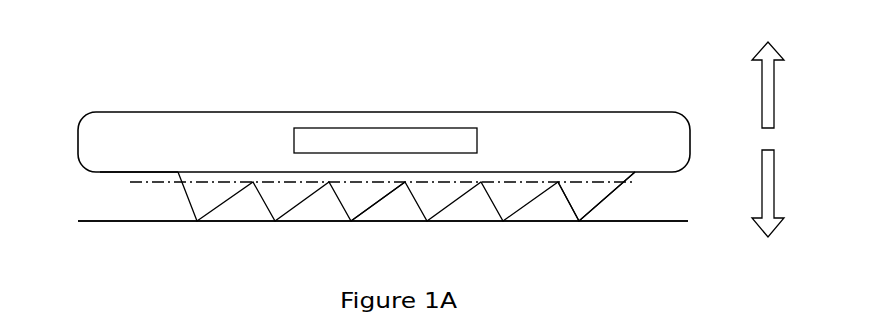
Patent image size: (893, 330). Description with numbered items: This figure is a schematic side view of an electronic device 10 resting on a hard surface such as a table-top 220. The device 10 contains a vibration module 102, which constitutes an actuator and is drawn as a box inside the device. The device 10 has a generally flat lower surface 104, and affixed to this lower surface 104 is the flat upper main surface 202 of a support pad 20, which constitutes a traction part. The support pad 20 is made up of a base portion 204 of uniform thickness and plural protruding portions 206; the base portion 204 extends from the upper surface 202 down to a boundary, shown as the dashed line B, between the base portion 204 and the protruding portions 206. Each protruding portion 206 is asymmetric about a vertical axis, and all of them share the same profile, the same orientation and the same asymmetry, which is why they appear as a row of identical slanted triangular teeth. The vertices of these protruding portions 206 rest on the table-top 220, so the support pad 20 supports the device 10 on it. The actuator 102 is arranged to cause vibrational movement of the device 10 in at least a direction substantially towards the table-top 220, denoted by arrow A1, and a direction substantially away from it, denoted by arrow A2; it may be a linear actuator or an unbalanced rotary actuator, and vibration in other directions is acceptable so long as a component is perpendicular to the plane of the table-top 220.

The electronic device 10 is at (216, 112).
The vibration module 102 is at (425, 128).
The lower surface 104 is at (125, 165).
The boundary B is at (127, 184).
The support pad 20 is at (158, 205).
The protruding portions 206 is at (360, 205).
The upper main surface 202 is at (565, 181).
The base portion 204 is at (598, 181).
The table-top 220 is at (675, 212).
The arrow A1 is at (768, 207).
The arrow A2 is at (768, 72).